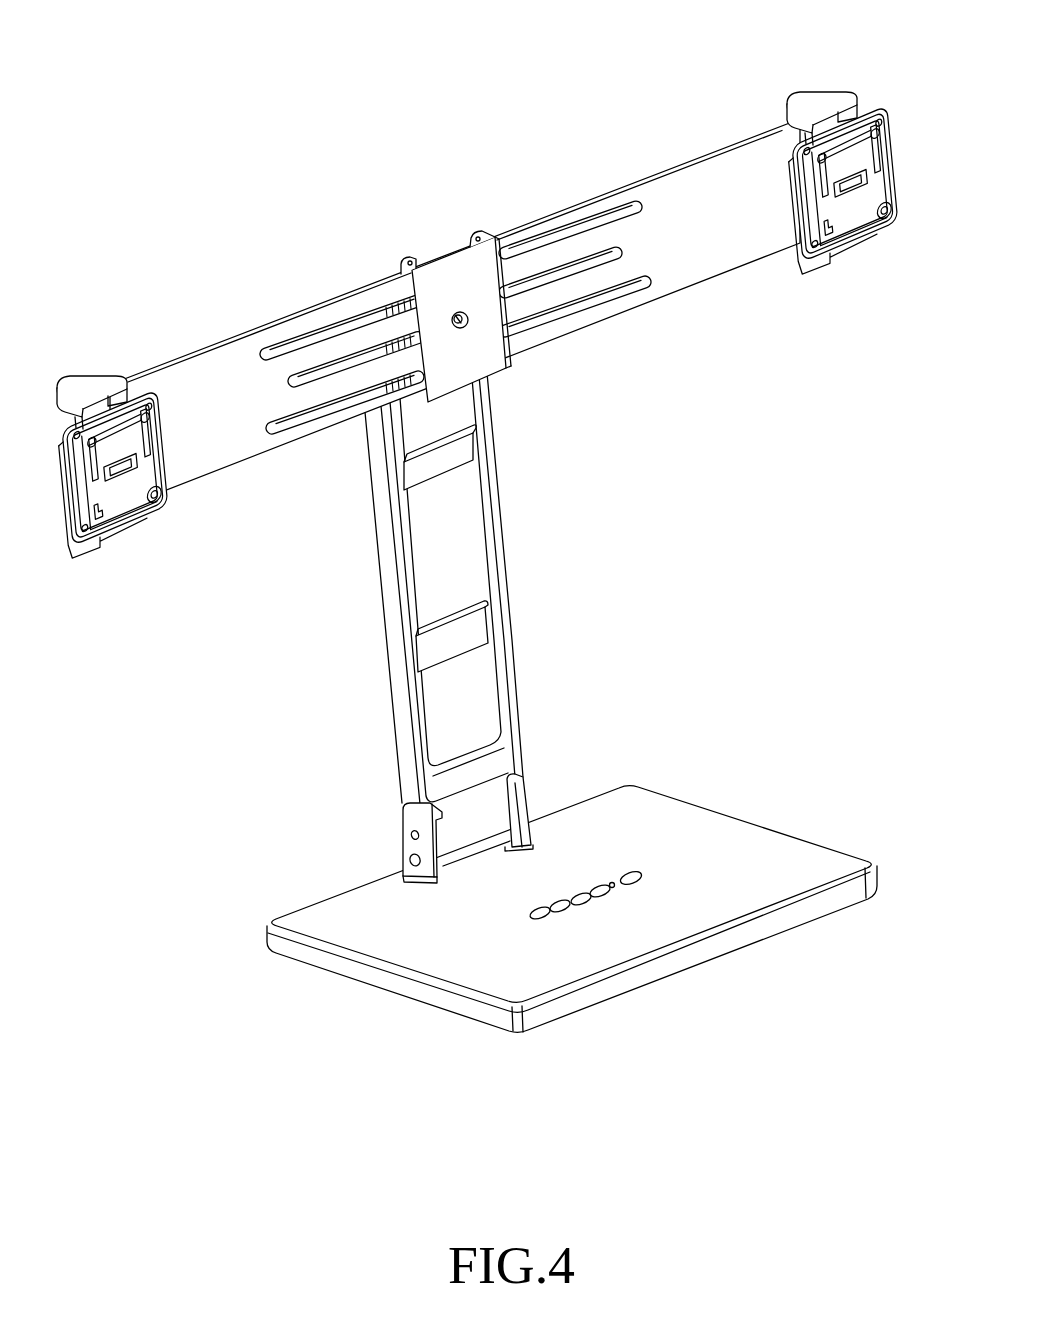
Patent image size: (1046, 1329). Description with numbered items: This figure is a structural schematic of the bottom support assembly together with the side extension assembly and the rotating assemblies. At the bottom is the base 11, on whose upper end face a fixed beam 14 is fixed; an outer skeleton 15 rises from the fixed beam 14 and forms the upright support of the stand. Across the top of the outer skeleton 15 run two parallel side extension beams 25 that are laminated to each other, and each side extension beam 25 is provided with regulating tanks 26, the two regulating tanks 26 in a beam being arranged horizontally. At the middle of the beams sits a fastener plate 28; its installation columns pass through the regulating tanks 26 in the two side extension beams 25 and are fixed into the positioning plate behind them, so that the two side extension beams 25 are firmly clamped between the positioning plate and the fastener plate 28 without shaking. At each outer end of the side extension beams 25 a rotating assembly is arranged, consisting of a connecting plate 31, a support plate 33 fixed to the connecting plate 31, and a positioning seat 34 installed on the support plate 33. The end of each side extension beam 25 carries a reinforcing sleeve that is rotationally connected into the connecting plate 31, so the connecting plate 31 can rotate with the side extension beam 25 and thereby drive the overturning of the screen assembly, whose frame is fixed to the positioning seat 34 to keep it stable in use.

The base 11 is at (584, 909).
The fixed beam 14 is at (295, 901).
The outer skeleton 15 is at (335, 612).
The side extension beam 25 is at (455, 279).
The regulating tank 26 is at (455, 253).
The fastener plate 28 is at (403, 248).
The connecting plate 31 is at (794, 72).
The support plate 33 is at (805, 168).
The positioning seat 34 is at (851, 183).